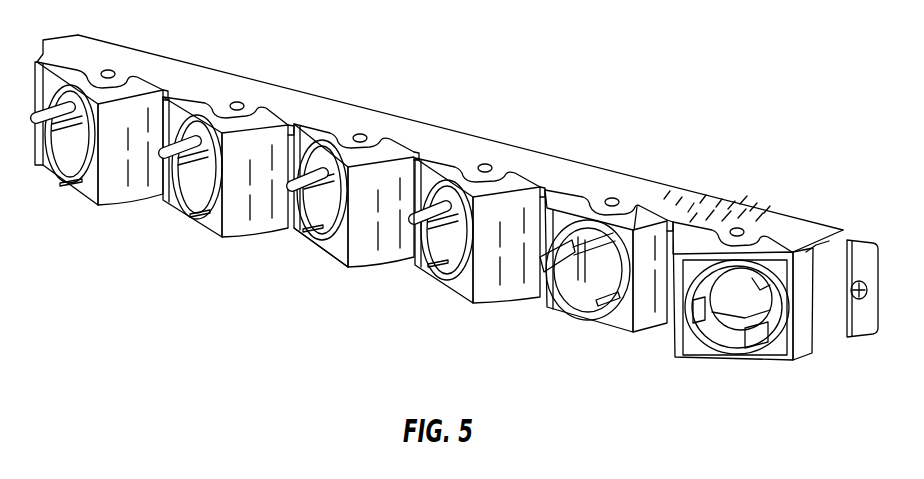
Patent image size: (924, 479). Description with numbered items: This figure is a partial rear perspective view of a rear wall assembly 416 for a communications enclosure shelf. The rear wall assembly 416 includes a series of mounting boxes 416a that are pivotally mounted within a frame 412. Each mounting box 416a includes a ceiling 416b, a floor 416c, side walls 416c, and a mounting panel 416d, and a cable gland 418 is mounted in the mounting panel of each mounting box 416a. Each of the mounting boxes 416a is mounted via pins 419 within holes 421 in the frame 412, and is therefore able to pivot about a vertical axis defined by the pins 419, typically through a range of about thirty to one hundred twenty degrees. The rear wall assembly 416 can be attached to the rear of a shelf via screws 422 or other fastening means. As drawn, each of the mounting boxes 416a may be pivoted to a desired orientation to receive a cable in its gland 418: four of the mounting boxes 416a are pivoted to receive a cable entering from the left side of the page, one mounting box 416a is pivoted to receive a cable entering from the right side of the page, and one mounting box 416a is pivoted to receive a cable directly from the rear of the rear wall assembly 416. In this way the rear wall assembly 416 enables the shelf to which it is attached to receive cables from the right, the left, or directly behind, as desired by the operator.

The frame 412 is at (774, 212).
The rear wall assembly 416 is at (736, 129).
The mounting box 416a is at (66, 228).
The ceiling 416b is at (343, 205).
The floor 416c is at (366, 259).
The mounting panel 416d is at (336, 259).
The cable gland 418 is at (300, 229).
The pin 419 is at (362, 134).
The hole 421 is at (358, 137).
The screw 422 is at (862, 302).